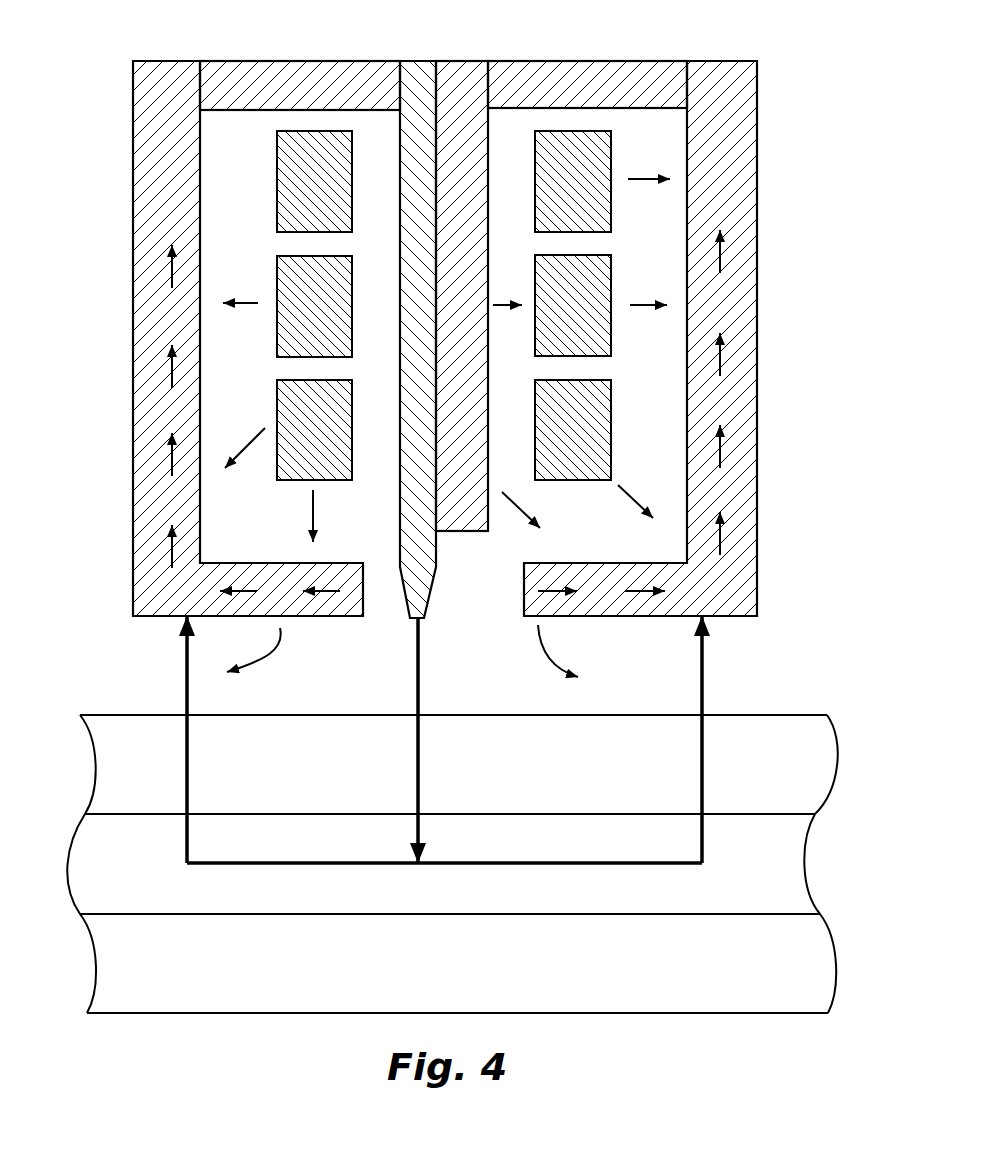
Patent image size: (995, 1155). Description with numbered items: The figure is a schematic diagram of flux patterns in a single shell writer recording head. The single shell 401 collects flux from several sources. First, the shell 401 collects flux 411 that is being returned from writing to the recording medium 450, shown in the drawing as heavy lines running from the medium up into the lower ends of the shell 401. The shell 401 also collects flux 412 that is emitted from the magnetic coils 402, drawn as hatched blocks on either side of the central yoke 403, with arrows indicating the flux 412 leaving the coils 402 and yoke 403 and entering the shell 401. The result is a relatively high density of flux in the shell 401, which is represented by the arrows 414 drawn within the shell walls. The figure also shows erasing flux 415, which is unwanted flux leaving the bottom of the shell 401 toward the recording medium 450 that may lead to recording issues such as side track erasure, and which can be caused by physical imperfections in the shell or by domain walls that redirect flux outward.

The single shell 401 is at (162, 593).
The magnetic coils 402 is at (277, 183).
The yoke 403 is at (488, 138).
The flux 411 is at (187, 664).
The flux 412 is at (247, 303).
The arrows 414 is at (172, 373).
The erasing flux 415 is at (270, 655).
The recording medium 450 is at (85, 815).